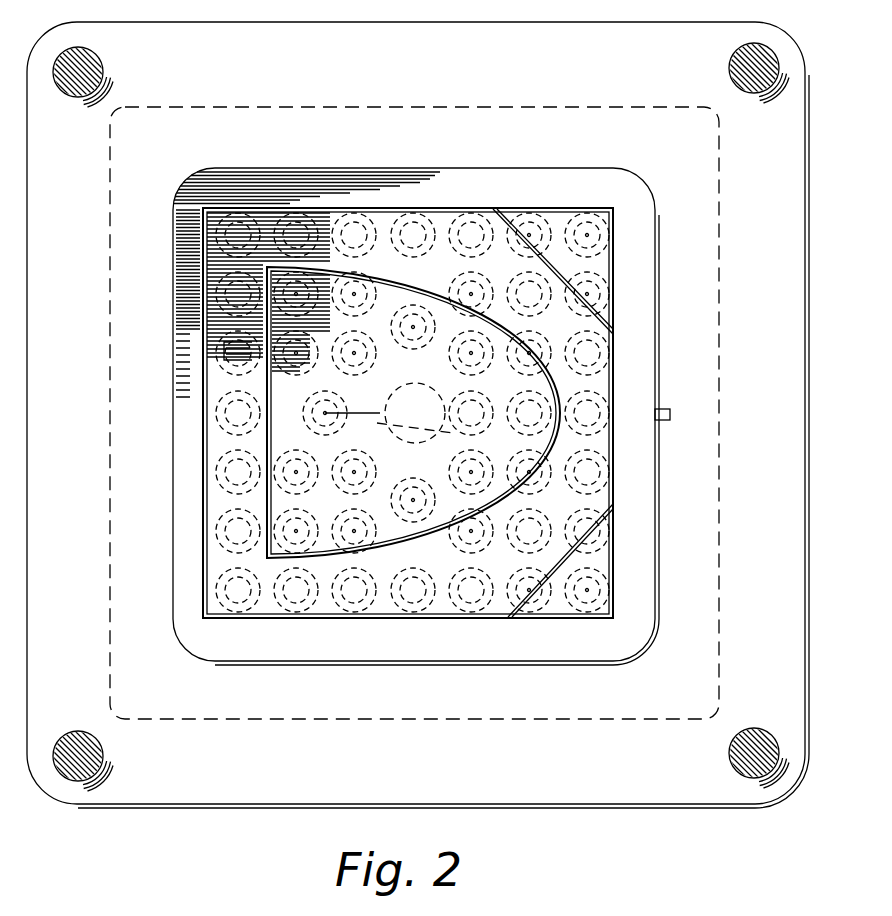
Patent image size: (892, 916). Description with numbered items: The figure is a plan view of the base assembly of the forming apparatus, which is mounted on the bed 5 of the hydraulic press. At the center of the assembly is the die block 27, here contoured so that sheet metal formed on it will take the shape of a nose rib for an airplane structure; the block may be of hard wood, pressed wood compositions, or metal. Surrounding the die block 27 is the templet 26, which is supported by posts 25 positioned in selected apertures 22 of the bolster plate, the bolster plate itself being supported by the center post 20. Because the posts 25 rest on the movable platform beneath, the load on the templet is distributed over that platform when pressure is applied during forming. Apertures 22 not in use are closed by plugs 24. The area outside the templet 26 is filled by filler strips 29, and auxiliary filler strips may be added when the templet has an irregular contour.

The bed of the hydraulic press 5 is at (219, 793).
The center post 20 is at (421, 376).
The apertures 22 is at (238, 347).
The plugs 24 is at (300, 532).
The posts 25 is at (304, 214).
The templet 26 is at (218, 490).
The die block 27 is at (394, 302).
The filler strips 29 is at (177, 414).